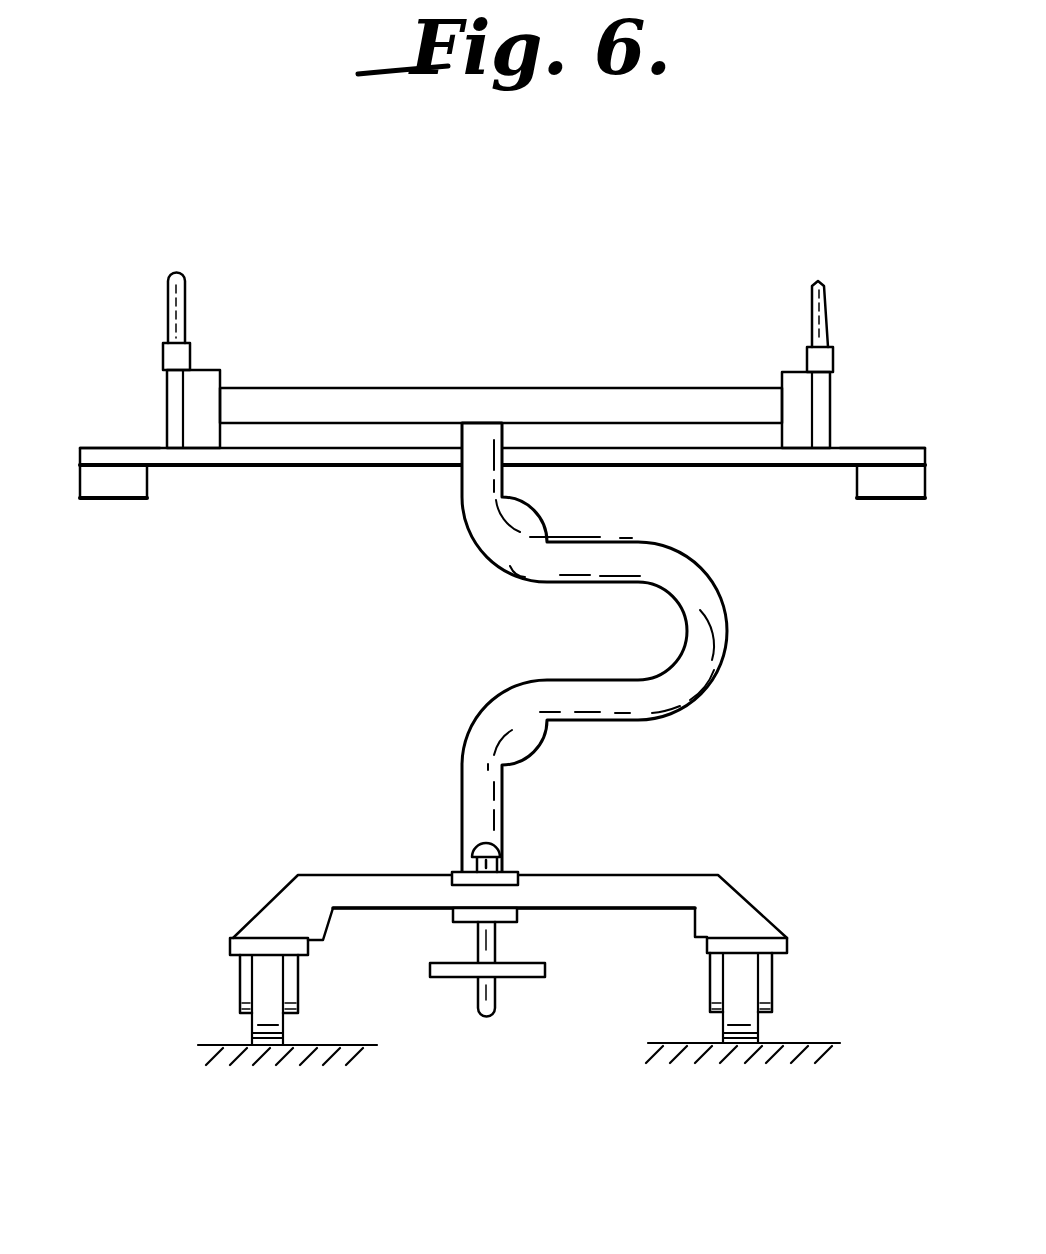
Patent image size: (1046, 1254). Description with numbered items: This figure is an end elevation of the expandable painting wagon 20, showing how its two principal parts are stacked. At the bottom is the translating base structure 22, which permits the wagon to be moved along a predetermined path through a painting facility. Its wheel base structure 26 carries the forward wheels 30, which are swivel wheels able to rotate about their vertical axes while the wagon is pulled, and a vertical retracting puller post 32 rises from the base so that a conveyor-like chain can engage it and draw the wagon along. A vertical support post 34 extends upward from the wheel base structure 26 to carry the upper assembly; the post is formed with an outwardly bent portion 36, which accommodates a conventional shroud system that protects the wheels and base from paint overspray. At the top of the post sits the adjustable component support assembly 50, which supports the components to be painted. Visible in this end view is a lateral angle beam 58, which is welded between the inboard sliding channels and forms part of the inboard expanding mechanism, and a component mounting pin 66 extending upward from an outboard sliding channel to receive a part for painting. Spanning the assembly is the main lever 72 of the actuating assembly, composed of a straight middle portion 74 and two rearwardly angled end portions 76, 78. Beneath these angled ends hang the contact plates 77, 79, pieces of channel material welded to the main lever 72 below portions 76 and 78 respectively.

The expandable painting wagon 20 is at (240, 290).
The translating base structure 22 is at (437, 818).
The wheel base structure 26 is at (663, 877).
The forward wheels 30 is at (773, 988).
The vertical retracting puller post 32 is at (518, 868).
The vertical support post 34 is at (455, 510).
The outwardly bent portion 36 is at (718, 588).
The adjustable component support assembly 50 is at (848, 378).
The lateral angle beam 58 is at (545, 385).
The component mounting pin 66 is at (828, 301).
The main lever 72 is at (203, 473).
The straight middle portion 74 is at (332, 467).
The rearwardly angled end portion 76 is at (136, 448).
The contact plate 77 is at (113, 498).
The rearwardly angled end portion 78 is at (868, 448).
The contact plate 79 is at (868, 498).